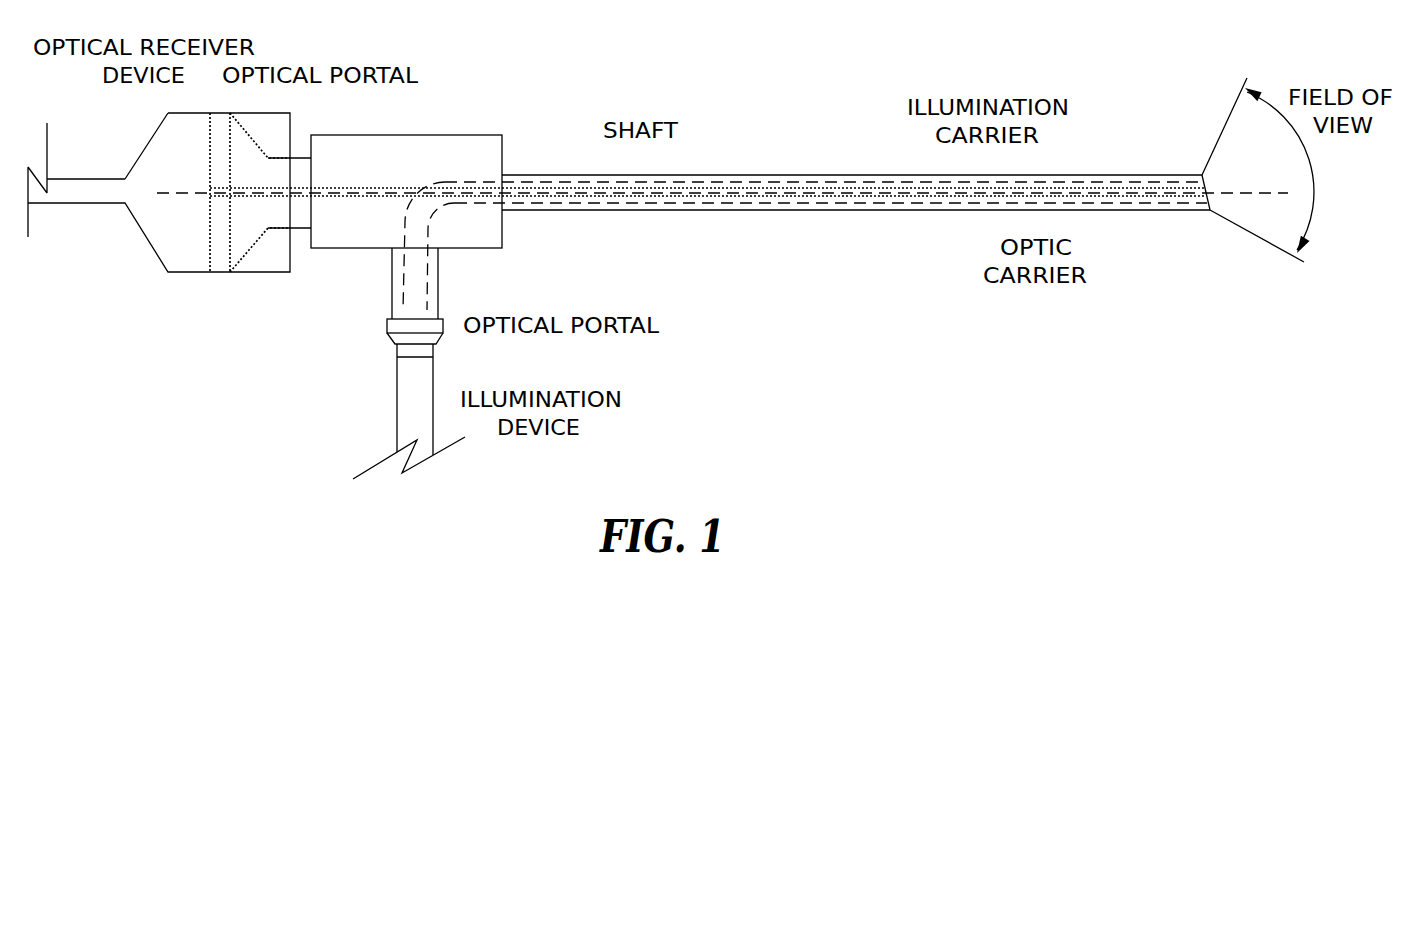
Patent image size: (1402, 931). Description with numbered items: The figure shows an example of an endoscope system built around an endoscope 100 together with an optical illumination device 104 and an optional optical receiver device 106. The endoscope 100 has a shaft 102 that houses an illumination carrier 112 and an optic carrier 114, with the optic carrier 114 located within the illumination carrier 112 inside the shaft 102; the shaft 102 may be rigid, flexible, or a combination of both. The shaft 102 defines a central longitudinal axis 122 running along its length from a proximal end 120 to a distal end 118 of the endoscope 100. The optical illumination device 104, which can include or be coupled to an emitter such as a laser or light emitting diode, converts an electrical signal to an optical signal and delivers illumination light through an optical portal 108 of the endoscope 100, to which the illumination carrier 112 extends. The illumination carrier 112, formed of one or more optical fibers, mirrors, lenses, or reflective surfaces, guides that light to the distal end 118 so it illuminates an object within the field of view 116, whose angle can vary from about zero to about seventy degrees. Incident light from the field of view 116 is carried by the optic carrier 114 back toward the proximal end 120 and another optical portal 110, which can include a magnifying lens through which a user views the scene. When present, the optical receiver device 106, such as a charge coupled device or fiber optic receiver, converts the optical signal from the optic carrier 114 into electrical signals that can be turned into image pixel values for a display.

The endoscope 100 is at (537, 112).
The shaft 102 is at (588, 175).
The optical illumination device 104 is at (435, 392).
The optical receiver device 106 is at (192, 113).
The optical portal 108 is at (428, 318).
The optical portal 110 is at (220, 117).
The illumination carrier 112 is at (917, 182).
The optic carrier 114 is at (978, 188).
The field of view 116 is at (1306, 190).
The distal end 118 is at (1206, 185).
The proximal end 120 is at (210, 228).
The central longitudinal axis 122 is at (1227, 194).